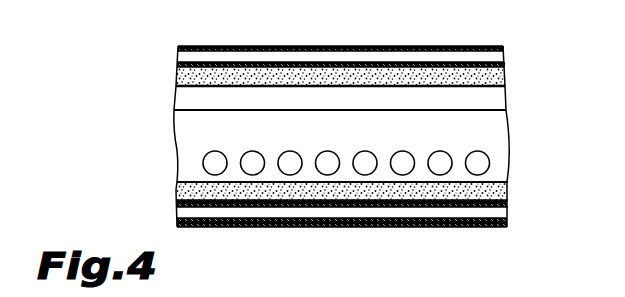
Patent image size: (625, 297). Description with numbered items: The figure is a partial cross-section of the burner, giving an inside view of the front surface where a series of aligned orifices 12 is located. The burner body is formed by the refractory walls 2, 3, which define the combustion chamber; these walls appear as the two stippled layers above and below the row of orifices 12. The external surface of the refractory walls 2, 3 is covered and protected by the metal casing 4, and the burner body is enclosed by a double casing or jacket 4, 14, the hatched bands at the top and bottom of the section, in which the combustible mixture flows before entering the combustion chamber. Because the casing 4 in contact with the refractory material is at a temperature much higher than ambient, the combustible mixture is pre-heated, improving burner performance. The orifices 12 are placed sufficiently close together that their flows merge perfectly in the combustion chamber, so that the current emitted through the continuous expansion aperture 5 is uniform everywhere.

The refractory wall 2 is at (338, 78).
The refractory wall 3 is at (382, 184).
The metal casing 4 is at (293, 62).
The aperture 5 is at (435, 100).
The orifices 12 is at (215, 166).
The jacket wall 14 is at (392, 50).